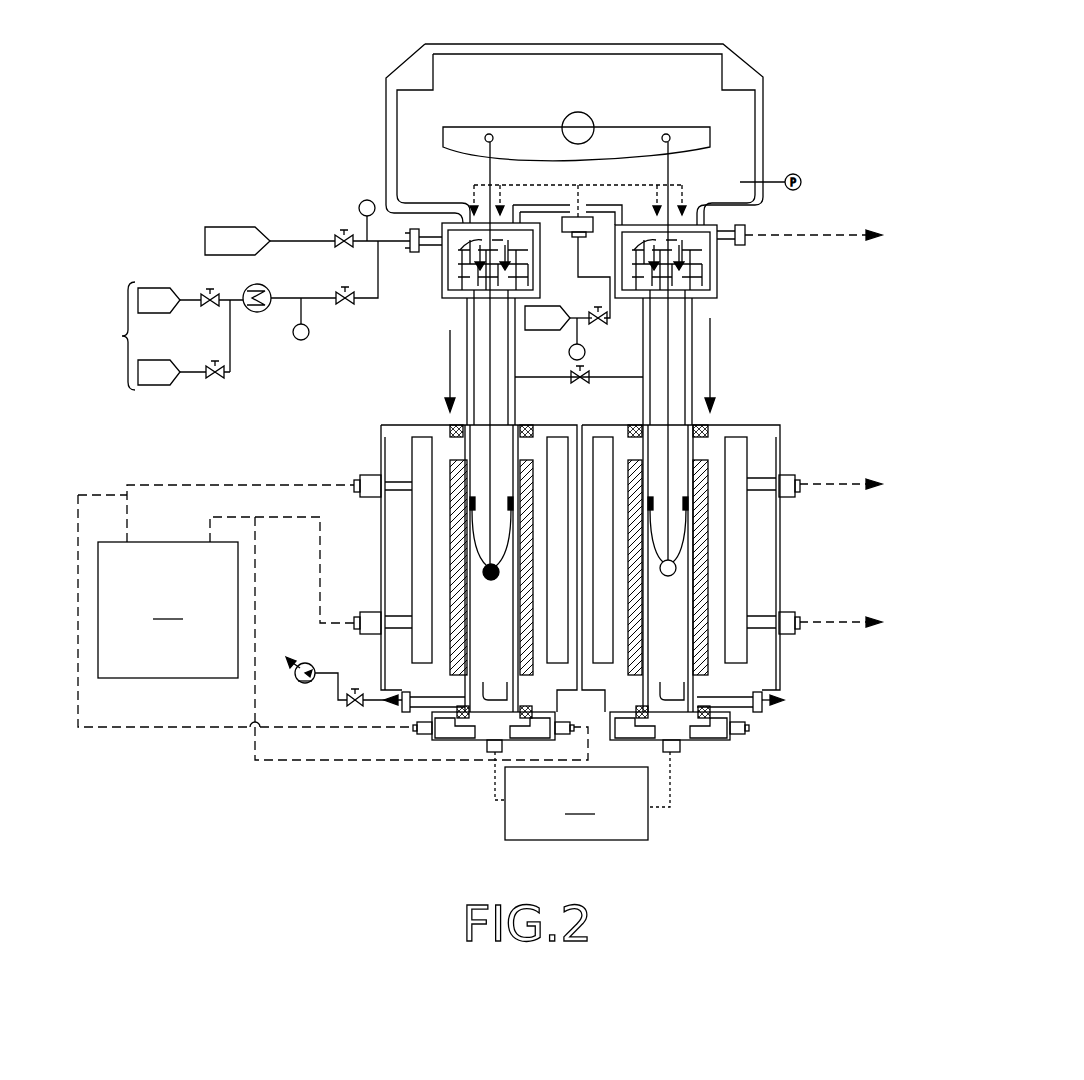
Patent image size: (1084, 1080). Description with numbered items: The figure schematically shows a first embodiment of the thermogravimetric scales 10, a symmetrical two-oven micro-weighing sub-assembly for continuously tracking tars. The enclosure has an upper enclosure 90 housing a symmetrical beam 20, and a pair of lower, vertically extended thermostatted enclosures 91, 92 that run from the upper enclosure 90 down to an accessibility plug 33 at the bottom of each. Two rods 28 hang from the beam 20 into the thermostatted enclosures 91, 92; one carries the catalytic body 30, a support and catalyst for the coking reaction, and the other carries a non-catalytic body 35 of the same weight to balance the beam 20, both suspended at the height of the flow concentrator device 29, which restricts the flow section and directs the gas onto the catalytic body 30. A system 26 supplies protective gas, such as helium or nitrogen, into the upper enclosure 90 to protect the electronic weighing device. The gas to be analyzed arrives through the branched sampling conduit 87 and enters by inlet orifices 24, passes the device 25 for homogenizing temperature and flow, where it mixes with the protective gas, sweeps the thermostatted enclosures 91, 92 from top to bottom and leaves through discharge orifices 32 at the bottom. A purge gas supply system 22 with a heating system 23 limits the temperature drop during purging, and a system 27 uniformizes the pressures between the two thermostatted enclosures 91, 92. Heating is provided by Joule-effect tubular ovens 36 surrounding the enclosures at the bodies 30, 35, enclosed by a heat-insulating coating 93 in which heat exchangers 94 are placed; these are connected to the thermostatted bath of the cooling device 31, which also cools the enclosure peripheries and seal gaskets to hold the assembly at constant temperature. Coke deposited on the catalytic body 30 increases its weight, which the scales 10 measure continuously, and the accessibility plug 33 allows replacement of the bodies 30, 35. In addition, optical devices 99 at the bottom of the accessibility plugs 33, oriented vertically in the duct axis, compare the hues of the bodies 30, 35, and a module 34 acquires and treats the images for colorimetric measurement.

The thermogravimetric scales 10 is at (797, 300).
The beam 20 is at (448, 135).
The purge gas supply system 22 is at (166, 336).
The heating system 23 is at (264, 312).
The inlet orifices 24 is at (414, 252).
The device for homogenizing the temperature and flow 25 is at (470, 285).
The system for supplying protective gas 26 is at (556, 334).
The system for uniformizing the pressures 27 is at (592, 386).
The rods 28 is at (478, 418).
The flow concentrator device 29 is at (468, 520).
The catalytic body 30 is at (483, 570).
The cooling device 31 is at (506, 616).
The discharge orifices 32 is at (350, 708).
The accessibility plug 33 is at (428, 742).
The module for acquiring and treating images 34 is at (582, 796).
The non-catalytic body 35 is at (700, 592).
The tubular ovens 36 is at (455, 612).
The sampling conduit 87 is at (312, 240).
The upper enclosure 90 is at (763, 102).
The thermostatted enclosure 91 is at (450, 376).
The thermostatted enclosure 92 is at (698, 322).
The heat-insulating coating 93 is at (405, 427).
The heat exchangers 94 is at (418, 448).
The optical device 99 is at (485, 748).